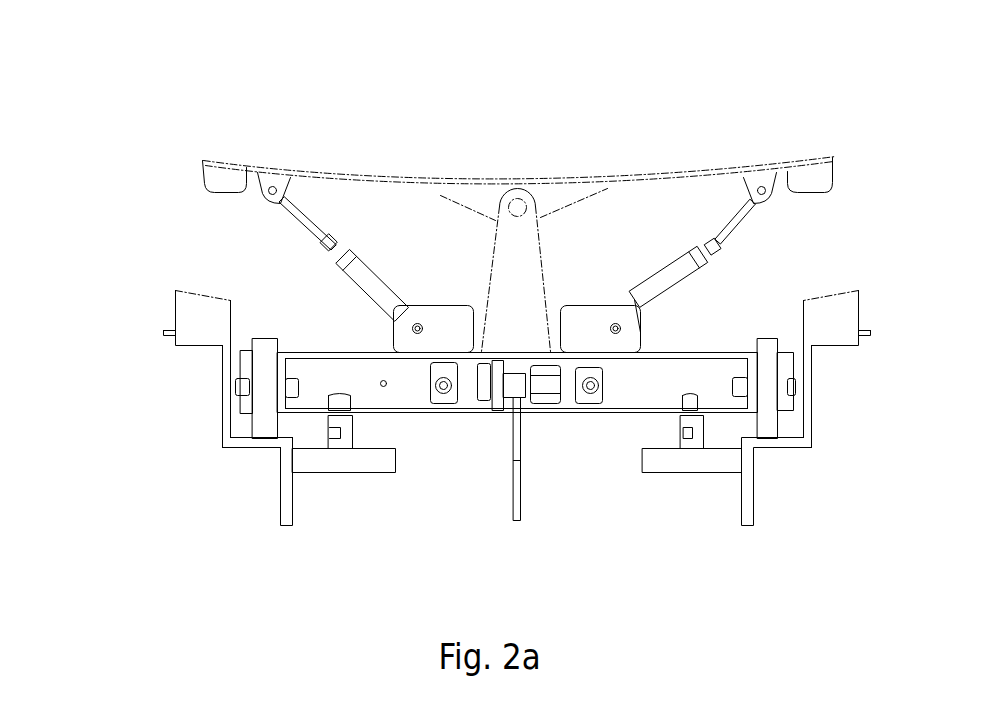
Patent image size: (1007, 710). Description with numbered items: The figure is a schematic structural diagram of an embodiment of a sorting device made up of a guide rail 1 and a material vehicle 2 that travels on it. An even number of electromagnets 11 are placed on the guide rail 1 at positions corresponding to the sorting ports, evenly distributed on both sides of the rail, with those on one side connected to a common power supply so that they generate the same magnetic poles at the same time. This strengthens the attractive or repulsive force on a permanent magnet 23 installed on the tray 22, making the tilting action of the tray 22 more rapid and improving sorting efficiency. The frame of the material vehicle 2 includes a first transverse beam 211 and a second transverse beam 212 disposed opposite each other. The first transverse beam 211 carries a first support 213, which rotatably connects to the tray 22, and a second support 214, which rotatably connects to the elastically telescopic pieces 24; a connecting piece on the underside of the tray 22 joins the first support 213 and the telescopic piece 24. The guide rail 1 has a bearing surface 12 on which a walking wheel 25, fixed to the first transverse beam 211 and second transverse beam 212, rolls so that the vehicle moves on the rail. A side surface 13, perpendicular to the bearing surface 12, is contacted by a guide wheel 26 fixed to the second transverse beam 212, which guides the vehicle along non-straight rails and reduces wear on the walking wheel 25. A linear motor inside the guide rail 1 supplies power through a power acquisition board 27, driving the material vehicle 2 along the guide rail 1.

The guide rail 1 is at (227, 402).
The electromagnet 11 is at (205, 315).
The bearing surface 12 is at (248, 445).
The side surface 13 is at (280, 515).
The material vehicle 2 is at (412, 390).
The first transverse beam 211 is at (682, 345).
The second transverse beam 212 is at (537, 413).
The first support 213 is at (525, 260).
The second support 214 is at (587, 325).
The tray 22 is at (373, 175).
The permanent magnet 23 is at (217, 177).
The elastically telescopic piece 24 is at (276, 172).
The walking wheel 25 is at (785, 418).
The guide wheel 26 is at (685, 460).
The power acquisition board 27 is at (513, 500).